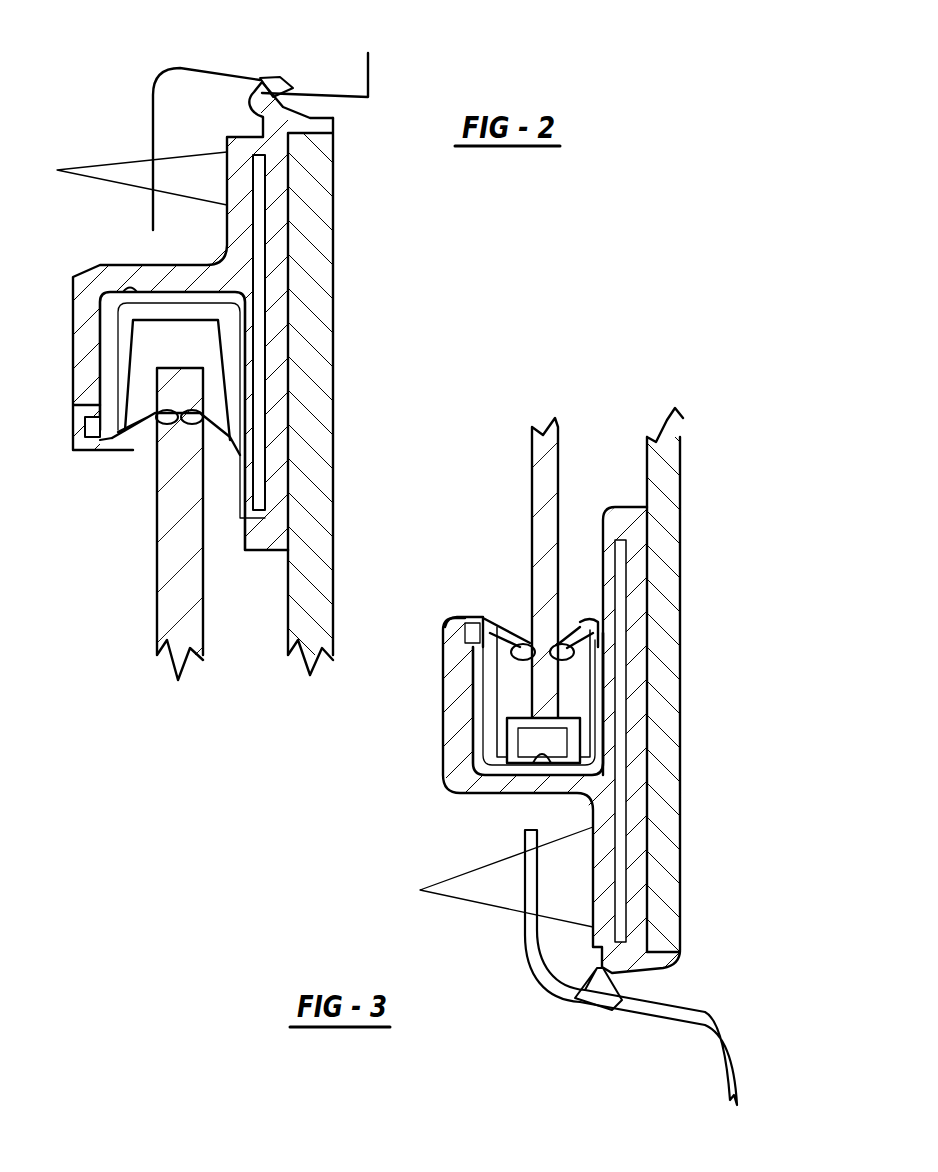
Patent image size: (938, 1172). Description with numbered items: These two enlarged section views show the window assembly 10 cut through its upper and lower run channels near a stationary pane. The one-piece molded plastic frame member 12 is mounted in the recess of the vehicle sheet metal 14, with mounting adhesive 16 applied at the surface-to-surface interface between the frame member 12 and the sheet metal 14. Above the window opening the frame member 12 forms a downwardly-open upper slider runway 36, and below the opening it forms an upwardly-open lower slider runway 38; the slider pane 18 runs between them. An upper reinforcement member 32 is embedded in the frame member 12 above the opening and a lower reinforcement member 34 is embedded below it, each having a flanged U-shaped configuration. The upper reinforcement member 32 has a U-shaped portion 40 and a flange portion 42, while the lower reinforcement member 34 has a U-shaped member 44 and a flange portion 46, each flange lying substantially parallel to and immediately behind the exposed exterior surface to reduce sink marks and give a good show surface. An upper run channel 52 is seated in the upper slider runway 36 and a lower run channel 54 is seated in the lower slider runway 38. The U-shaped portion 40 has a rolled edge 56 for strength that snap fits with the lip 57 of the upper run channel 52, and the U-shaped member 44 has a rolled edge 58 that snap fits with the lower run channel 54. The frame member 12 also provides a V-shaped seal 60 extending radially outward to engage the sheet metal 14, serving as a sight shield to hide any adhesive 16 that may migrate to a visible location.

In FIG. 2, the window assembly 10 is at (375, 349).
In FIG. 3, the window assembly 10 is at (425, 530).
In FIG. 2, the frame member 12 is at (177, 285).
In FIG. 3, the frame member 12 is at (458, 730).
In FIG. 2, the sheet metal 14 is at (372, 66).
In FIG. 3, the sheet metal 14 is at (725, 1030).
In FIG. 2, the mounting adhesive 16 is at (100, 175).
In FIG. 3, the mounting adhesive 16 is at (483, 883).
In FIG. 2, the slider pane 18 is at (177, 563).
In FIG. 3, the slider pane 18 is at (548, 462).
In FIG. 2, the upper reinforcement member 32 is at (263, 220).
In FIG. 3, the lower reinforcement member 34 is at (620, 713).
In FIG. 2, the upper slider runway 36 is at (130, 292).
In FIG. 3, the lower slider runway 38 is at (542, 755).
In FIG. 2, the U-shaped portion 40 is at (107, 375).
In FIG. 2, the flange portion 42 is at (258, 266).
In FIG. 3, the U-shaped member 44 is at (480, 684).
In FIG. 3, the flange portion 46 is at (620, 848).
In FIG. 2, the upper run channel 52 is at (145, 450).
In FIG. 3, the lower run channel 54 is at (578, 622).
In FIG. 2, the rolled edge 56 is at (100, 440).
In FIG. 2, the lip 57 is at (80, 420).
In FIG. 3, the rolled edge 58 is at (470, 628).
In FIG. 2, the V-shaped seal 60 is at (264, 82).
In FIG. 3, the V-shaped seal 60 is at (580, 993).